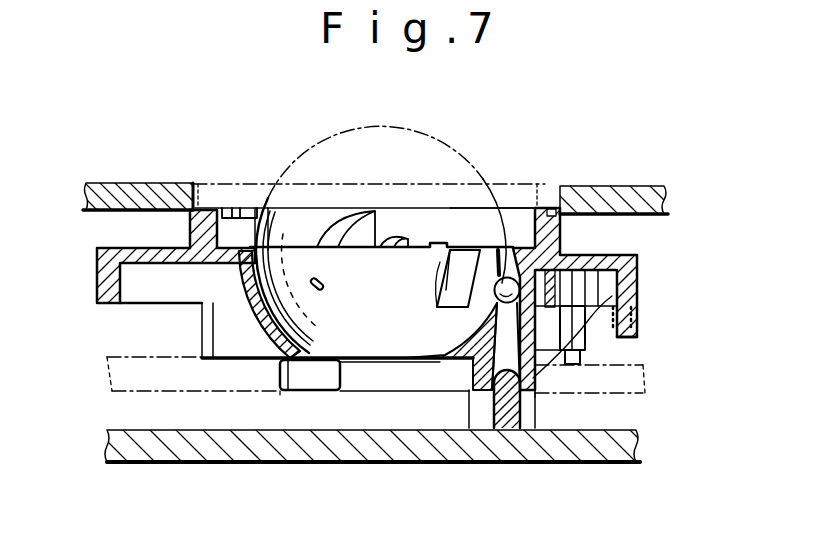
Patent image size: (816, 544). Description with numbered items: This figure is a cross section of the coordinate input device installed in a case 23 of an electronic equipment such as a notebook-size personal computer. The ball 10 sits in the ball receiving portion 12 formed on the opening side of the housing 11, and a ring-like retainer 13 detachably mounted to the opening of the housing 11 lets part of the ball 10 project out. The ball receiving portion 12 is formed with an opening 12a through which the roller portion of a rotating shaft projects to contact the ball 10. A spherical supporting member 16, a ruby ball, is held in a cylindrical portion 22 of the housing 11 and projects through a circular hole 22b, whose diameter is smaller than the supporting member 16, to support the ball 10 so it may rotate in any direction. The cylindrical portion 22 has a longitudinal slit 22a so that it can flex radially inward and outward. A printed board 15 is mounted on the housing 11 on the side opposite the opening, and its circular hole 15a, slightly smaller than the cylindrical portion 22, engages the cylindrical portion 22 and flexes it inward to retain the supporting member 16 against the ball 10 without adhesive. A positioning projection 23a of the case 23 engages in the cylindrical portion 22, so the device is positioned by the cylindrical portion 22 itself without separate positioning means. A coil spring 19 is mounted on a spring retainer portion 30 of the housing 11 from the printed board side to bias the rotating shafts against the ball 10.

The ball 10 is at (487, 168).
The housing 11 is at (159, 246).
The ball receiving portion 12 is at (286, 270).
The opening 12a is at (446, 282).
The retainer 13 is at (540, 187).
The printed board 15 is at (622, 398).
The circular hole 15a is at (272, 393).
The supporting member 16 is at (573, 254).
The coil spring 19 is at (632, 328).
The cylindrical portion 22 is at (313, 378).
The slit 22a is at (630, 290).
The circular hole 22b is at (495, 248).
The case 23 is at (103, 182).
The positioning projection 23a is at (485, 463).
The spring retainer portion 30 is at (620, 335).